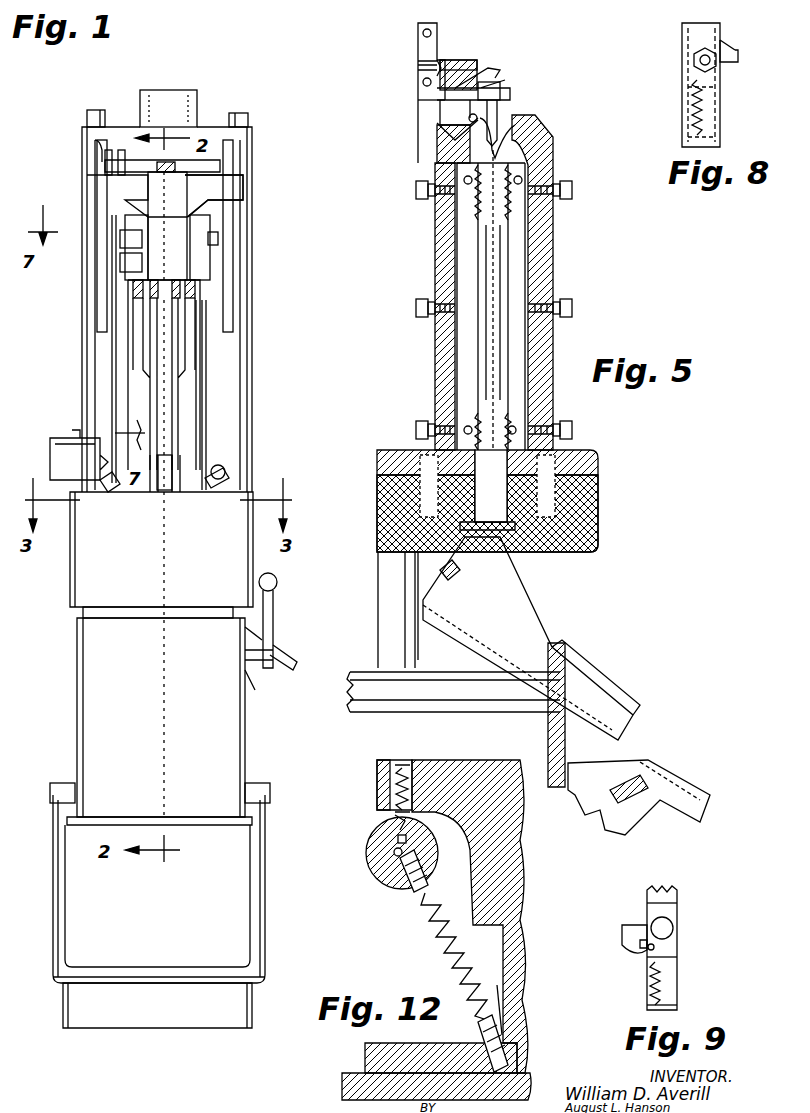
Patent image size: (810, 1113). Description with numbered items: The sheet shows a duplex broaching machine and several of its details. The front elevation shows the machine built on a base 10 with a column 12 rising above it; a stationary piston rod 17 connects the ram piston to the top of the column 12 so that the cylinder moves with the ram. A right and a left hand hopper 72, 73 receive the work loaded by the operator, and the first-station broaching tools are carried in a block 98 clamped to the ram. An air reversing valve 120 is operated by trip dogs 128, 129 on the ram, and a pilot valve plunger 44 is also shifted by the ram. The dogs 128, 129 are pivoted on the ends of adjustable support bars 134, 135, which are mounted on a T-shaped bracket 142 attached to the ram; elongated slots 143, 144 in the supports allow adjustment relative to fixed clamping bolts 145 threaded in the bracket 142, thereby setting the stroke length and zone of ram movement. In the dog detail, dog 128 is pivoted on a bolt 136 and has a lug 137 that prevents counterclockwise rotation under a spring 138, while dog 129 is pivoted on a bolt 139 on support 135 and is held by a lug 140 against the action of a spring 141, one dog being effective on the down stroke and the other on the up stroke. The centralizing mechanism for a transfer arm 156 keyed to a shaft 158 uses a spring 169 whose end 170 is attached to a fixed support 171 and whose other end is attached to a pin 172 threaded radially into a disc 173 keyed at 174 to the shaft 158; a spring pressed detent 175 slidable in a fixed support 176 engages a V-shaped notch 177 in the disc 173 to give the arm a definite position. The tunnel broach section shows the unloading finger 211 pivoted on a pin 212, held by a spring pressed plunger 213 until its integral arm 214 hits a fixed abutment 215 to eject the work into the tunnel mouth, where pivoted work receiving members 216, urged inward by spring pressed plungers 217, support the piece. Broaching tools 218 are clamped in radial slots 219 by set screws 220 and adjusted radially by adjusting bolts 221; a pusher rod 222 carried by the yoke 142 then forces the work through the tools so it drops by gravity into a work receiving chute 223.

In FIG. 1, the base 10 is at (75, 664).
In FIG. 1, the column 12 is at (235, 138).
In FIG. 1, the piston rod 17 is at (210, 168).
In FIG. 1, the pilot valve plunger 44 is at (226, 470).
In FIG. 1, the right hand hopper 72 is at (176, 492).
In FIG. 1, the left hand hopper 73 is at (152, 492).
In FIG. 1, the block 98 is at (200, 367).
In FIG. 1, the reversing valve 120 is at (62, 438).
In FIG. 8, the trip dog 128 is at (738, 54).
In FIG. 9, the trip dog 129 is at (630, 950).
In FIG. 1, the adjustable support bar 134 is at (90, 210).
In FIG. 8, the adjustable support bar 134 is at (686, 30).
In FIG. 1, the adjustable support bar 135 is at (108, 350).
In FIG. 9, the adjustable support bar 135 is at (665, 897).
In FIG. 8, the bolt 136 is at (694, 60).
In FIG. 8, the lug 137 is at (722, 40).
In FIG. 8, the spring 138 is at (693, 108).
In FIG. 9, the bolt 139 is at (666, 930).
In FIG. 9, the lug 140 is at (645, 960).
In FIG. 9, the spring 141 is at (658, 985).
In FIG. 1, the T-shaped bracket 142 is at (218, 187).
In FIG. 1, the elongated slot 143 is at (105, 165).
In FIG. 1, the elongated slot 144 is at (90, 140).
In FIG. 1, the clamping bolts 145 is at (85, 180).
In FIG. 5, the transfer arm 156 is at (418, 98).
In FIG. 12, the shaft 158 is at (396, 852).
In FIG. 12, the spring 169 is at (440, 935).
In FIG. 12, the end of spring 170 is at (480, 1036).
In FIG. 12, the fixed support 171 is at (500, 982).
In FIG. 12, the pin 172 is at (425, 888).
In FIG. 12, the disc 173 is at (385, 885).
In FIG. 12, the key 174 is at (400, 840).
In FIG. 12, the spring pressed detent 175 is at (395, 800).
In FIG. 12, the fixed support 176 is at (452, 768).
In FIG. 12, the V-shaped notch 177 is at (398, 826).
In FIG. 5, the unloading finger 211 is at (487, 72).
In FIG. 5, the pin 212 is at (424, 84).
In FIG. 5, the spring pressed plunger 213 is at (448, 60).
In FIG. 5, the arm 214 is at (440, 62).
In FIG. 5, the fixed abutment 215 is at (420, 62).
In FIG. 5, the work receiving members 216 is at (440, 110).
In FIG. 5, the spring pressed plungers 217 is at (440, 140).
In FIG. 5, the broaching tools 218 is at (468, 246).
In FIG. 5, the radial slots 219 is at (530, 258).
In FIG. 5, the set screws 220 is at (522, 180).
In FIG. 5, the adjusting bolts 221 is at (416, 190).
In FIG. 1, the pusher rod 222 is at (235, 294).
In FIG. 5, the work receiving chute 223 is at (520, 612).